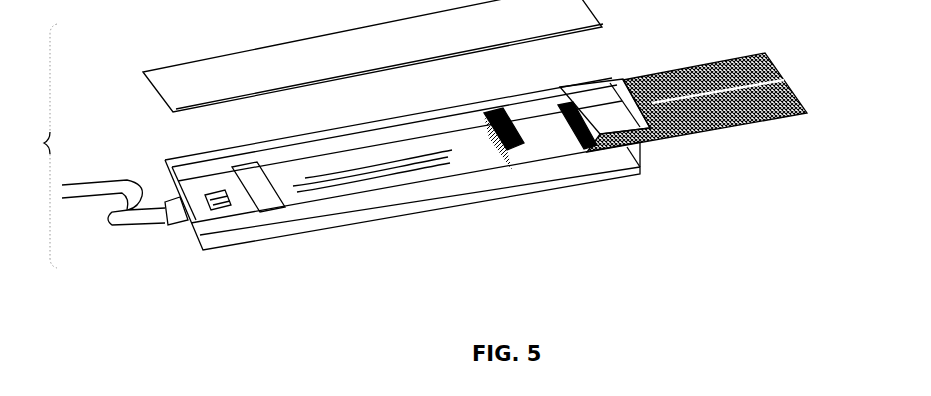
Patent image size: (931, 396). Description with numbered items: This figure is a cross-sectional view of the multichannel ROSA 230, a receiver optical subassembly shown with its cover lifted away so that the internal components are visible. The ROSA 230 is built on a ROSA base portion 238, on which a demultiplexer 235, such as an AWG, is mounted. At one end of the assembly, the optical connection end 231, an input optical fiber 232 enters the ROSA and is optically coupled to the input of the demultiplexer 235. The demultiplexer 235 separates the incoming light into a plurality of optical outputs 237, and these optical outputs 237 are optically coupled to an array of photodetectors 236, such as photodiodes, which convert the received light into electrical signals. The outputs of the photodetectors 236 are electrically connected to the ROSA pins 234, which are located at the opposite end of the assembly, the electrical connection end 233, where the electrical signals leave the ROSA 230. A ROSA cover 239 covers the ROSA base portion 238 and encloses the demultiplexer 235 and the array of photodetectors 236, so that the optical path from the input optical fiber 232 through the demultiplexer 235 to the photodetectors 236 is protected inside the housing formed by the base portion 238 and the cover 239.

The multichannel ROSA 230 is at (33, 146).
The optical connection end 231 is at (158, 243).
The input optical fiber 232 is at (127, 225).
The electrical connection end 233 is at (677, 153).
The ROSA pins 234 is at (670, 72).
The demultiplexer 235 is at (320, 173).
The array of photodetectors 236 is at (466, 129).
The optical outputs 237 is at (507, 150).
The ROSA base portion 238 is at (423, 203).
The ROSA cover 239 is at (203, 72).